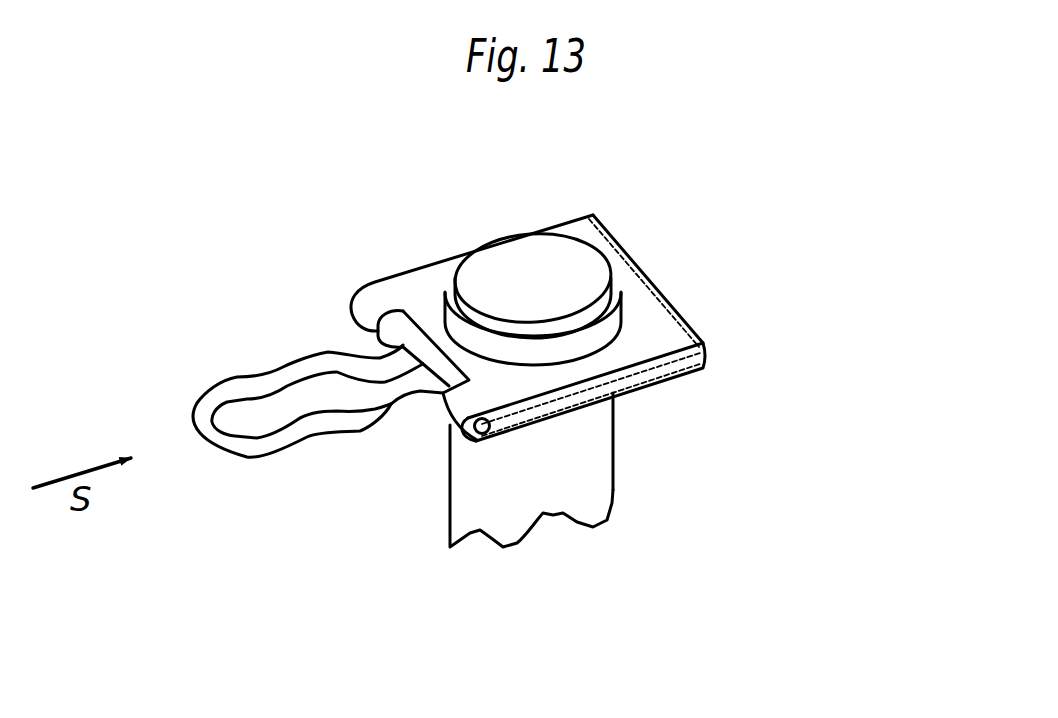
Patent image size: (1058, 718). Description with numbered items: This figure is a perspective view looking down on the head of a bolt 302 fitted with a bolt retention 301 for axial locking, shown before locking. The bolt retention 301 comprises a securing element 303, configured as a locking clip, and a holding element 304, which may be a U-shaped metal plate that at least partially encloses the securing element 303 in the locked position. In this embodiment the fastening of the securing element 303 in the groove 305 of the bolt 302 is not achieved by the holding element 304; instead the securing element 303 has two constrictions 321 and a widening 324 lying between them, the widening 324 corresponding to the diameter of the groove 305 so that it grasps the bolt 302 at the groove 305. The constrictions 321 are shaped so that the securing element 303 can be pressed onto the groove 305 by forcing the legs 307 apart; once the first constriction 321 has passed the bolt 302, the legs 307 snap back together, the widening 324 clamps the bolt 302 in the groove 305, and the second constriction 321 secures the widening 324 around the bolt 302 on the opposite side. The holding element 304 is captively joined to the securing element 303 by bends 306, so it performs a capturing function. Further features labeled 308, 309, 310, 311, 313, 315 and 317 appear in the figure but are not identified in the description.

The bolt retention 301 is at (728, 182).
The bolt 302 is at (613, 490).
The securing element 303 is at (253, 467).
The holding element 304 is at (422, 288).
The groove 305 is at (548, 374).
The bends 306 is at (486, 434).
The legs 307 is at (277, 443).
The spring end 308 is at (212, 458).
The rim 309 is at (657, 347).
The front wall 310 is at (678, 390).
The side edge 311 is at (447, 434).
The push button 313 is at (621, 305).
The rim edge 315 is at (693, 310).
The hook 317 is at (368, 337).
The constrictions 321 is at (267, 370).
The widening 324 is at (295, 351).